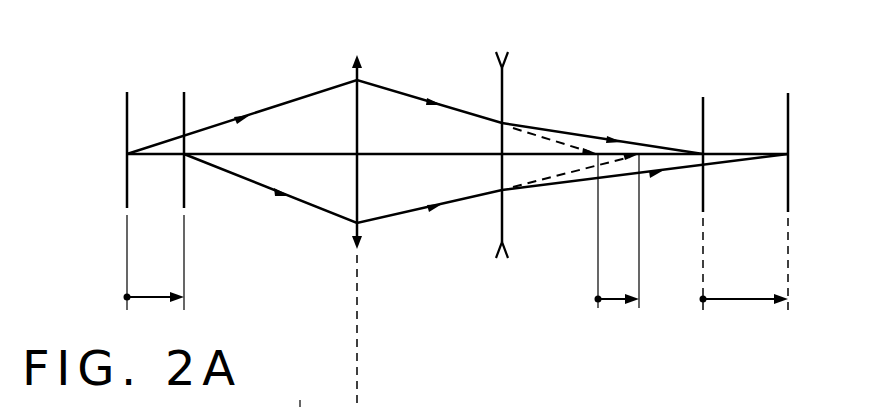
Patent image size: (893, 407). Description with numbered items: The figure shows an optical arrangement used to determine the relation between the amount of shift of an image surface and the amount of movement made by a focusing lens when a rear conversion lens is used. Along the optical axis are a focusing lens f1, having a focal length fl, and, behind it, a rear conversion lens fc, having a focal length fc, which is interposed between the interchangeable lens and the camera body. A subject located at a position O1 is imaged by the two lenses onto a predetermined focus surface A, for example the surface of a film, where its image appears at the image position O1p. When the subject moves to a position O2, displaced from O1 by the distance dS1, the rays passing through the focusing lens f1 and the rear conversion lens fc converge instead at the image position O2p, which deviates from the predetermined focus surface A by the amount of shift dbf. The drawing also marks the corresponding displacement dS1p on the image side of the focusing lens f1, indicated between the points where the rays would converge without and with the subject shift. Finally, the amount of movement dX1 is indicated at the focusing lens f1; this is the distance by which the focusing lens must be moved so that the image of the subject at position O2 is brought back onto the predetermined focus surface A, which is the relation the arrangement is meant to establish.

The subject position O1 is at (109, 201).
The shifted subject position O2 is at (166, 201).
The focusing lens f1 is at (355, 215).
The rear conversion lens fc is at (503, 140).
The predetermined focus surface A is at (701, 187).
The image position of the initial subject O1p is at (730, 134).
The image position of the shifted subject O2p is at (810, 201).
The amount of subject movement dS1 is at (154, 286).
The image-side displacement dS1p is at (576, 234).
The amount of shift of the image surface dbf is at (744, 284).
The amount of movement of the focusing lens dX1 is at (322, 393).